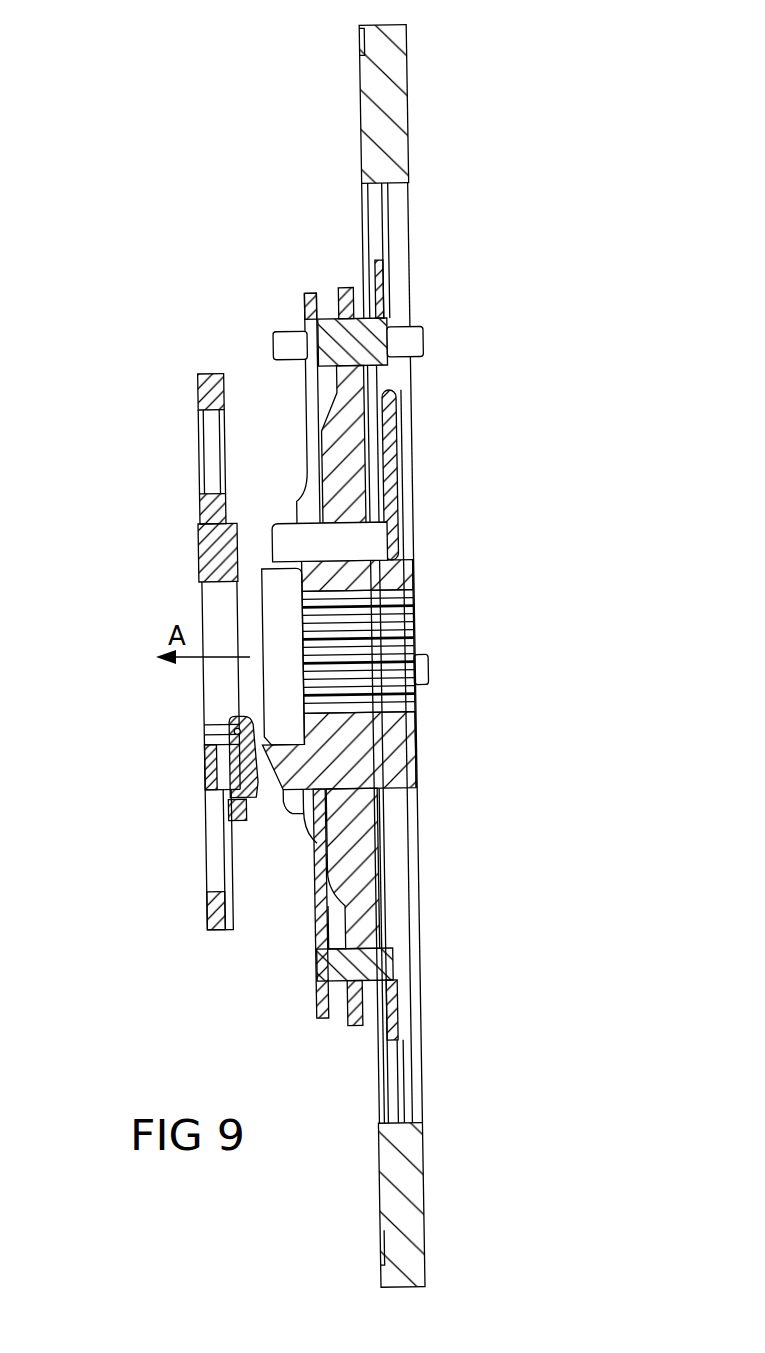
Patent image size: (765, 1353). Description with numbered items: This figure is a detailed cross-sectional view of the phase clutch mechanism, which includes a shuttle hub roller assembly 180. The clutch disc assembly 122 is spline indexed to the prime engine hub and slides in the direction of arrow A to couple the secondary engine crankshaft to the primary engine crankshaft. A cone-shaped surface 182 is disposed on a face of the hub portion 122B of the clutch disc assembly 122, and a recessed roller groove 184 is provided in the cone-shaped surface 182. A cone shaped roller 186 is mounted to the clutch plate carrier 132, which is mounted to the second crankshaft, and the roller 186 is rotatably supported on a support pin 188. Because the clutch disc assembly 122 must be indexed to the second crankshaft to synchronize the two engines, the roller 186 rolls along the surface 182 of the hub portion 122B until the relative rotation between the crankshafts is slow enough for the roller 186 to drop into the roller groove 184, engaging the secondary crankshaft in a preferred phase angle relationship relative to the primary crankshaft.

The clutch disc assembly 122 is at (433, 130).
The hub portion 122B is at (372, 735).
The cone-shaped surface 182 is at (266, 560).
The clutch plate carrier 132 is at (210, 558).
The shuttle hub roller assembly 180 is at (158, 807).
The cone shaped roller 186 is at (212, 762).
The support pin 188 is at (233, 815).
The recessed roller groove 184 is at (280, 784).